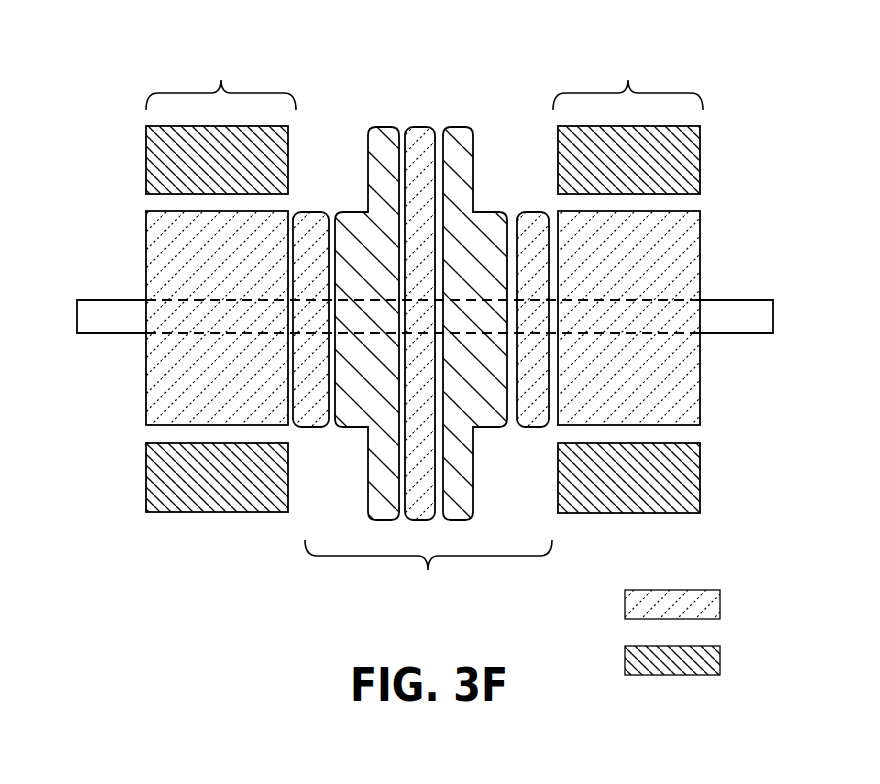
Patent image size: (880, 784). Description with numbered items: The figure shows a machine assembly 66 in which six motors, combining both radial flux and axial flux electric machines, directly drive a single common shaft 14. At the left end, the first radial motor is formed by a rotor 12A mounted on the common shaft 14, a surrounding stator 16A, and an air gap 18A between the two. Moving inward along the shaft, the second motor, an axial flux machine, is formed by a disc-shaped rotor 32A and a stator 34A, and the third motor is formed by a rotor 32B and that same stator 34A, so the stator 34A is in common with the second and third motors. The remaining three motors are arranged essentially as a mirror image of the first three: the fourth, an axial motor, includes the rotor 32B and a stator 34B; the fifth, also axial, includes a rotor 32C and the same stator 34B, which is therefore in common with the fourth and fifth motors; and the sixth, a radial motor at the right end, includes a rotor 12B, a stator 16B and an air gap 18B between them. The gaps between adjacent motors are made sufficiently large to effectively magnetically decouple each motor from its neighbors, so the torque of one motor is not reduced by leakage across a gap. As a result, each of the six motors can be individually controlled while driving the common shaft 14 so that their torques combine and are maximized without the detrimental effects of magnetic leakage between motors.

The rotor 12A is at (157, 378).
The rotor 12B is at (678, 375).
The common shaft 14 is at (773, 312).
The stator 16A is at (156, 160).
The stator 16B is at (690, 152).
The air gap 18A is at (154, 319).
The air gap 18B is at (680, 319).
The rotor 32A is at (312, 212).
The rotor 32B is at (417, 127).
The rotor 32C is at (528, 212).
The stator 34A is at (383, 127).
The stator 34B is at (452, 127).
The machine assembly 66 is at (143, 610).